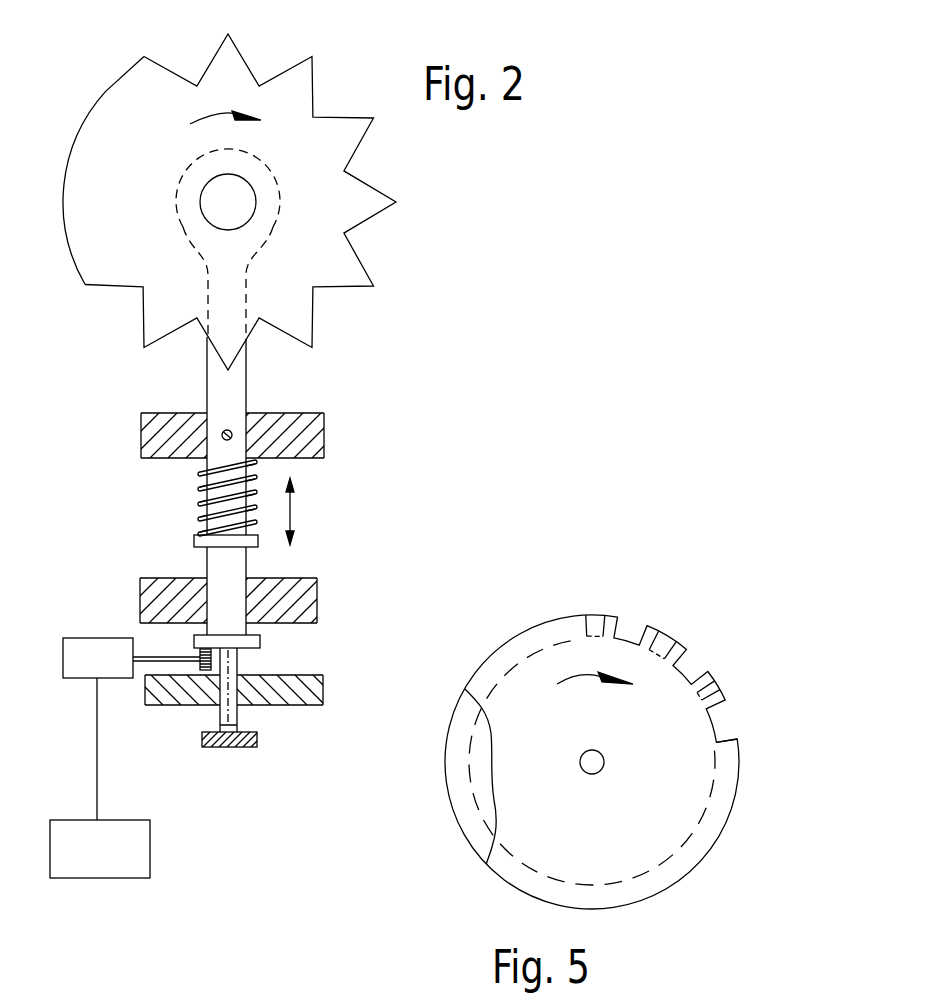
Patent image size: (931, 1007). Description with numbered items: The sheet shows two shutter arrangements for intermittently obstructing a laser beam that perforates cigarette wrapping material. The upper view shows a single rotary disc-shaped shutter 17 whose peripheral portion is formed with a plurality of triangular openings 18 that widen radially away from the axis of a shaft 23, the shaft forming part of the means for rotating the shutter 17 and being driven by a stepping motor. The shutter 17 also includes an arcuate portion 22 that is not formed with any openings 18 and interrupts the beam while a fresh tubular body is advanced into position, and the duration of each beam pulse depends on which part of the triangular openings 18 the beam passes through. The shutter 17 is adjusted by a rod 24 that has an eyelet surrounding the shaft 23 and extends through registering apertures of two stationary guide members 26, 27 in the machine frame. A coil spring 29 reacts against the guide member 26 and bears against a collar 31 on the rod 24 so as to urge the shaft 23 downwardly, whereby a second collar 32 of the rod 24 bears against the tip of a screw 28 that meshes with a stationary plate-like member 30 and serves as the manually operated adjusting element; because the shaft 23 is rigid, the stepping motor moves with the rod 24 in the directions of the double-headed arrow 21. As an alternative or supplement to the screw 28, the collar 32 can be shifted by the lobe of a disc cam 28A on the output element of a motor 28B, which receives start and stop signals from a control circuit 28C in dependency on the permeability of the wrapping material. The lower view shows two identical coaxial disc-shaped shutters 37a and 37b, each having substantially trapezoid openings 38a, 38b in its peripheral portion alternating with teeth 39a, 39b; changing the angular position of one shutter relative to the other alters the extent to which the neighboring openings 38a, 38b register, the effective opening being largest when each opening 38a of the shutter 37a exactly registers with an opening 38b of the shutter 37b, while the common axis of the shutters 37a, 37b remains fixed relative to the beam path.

In FIG. 2, the disc-shaped shutter 17 is at (445, 196).
In FIG. 2, the triangular openings 18 is at (363, 238).
In FIG. 2, the double-headed arrow 21 is at (292, 510).
In FIG. 2, the arcuate portion 22 is at (101, 112).
In FIG. 2, the shaft 23 is at (243, 205).
In FIG. 2, the rod 24 is at (237, 382).
In FIG. 2, the guide member 26 is at (207, 412).
In FIG. 2, the guide member 27 is at (207, 578).
In FIG. 2, the screw 28 is at (223, 745).
In FIG. 2, the disc cam 28A is at (207, 670).
In FIG. 2, the motor 28B is at (82, 638).
In FIG. 2, the control circuit 28C is at (150, 848).
In FIG. 2, the coil spring 29 is at (202, 483).
In FIG. 2, the plate-like member 30 is at (312, 705).
In FIG. 2, the collar 31 is at (258, 542).
In FIG. 2, the second collar 32 is at (256, 640).
In FIG. 5, the shutter 37a is at (616, 839).
In FIG. 5, the shutter 37b is at (460, 760).
In FIG. 5, the trapezoid openings 38a is at (777, 741).
In FIG. 5, the trapezoid openings 38b is at (722, 730).
In FIG. 5, the teeth 39a is at (708, 670).
In FIG. 5, the teeth 39b is at (722, 708).